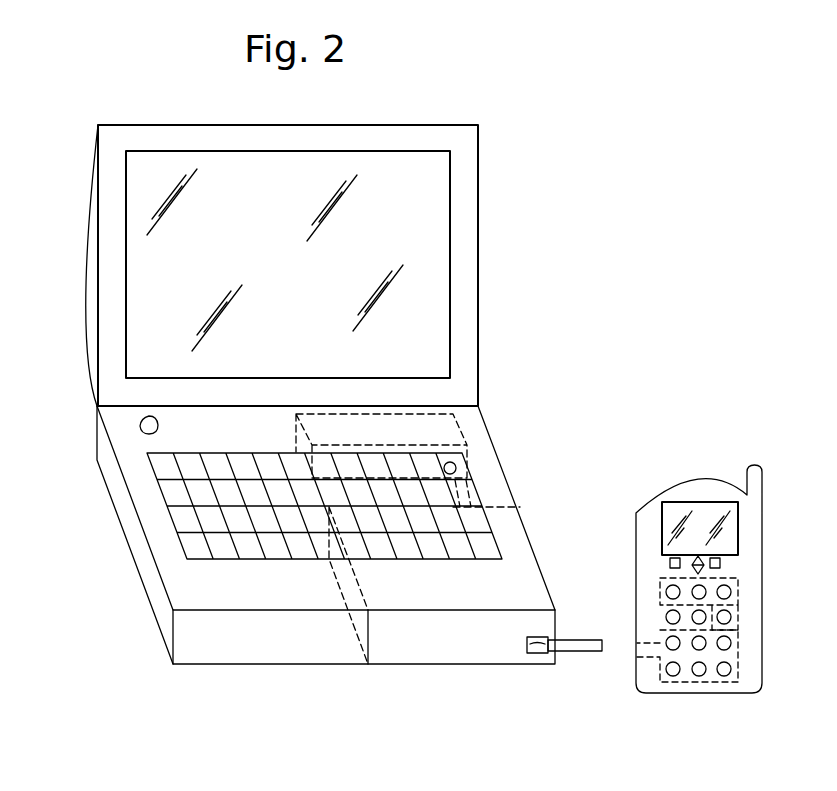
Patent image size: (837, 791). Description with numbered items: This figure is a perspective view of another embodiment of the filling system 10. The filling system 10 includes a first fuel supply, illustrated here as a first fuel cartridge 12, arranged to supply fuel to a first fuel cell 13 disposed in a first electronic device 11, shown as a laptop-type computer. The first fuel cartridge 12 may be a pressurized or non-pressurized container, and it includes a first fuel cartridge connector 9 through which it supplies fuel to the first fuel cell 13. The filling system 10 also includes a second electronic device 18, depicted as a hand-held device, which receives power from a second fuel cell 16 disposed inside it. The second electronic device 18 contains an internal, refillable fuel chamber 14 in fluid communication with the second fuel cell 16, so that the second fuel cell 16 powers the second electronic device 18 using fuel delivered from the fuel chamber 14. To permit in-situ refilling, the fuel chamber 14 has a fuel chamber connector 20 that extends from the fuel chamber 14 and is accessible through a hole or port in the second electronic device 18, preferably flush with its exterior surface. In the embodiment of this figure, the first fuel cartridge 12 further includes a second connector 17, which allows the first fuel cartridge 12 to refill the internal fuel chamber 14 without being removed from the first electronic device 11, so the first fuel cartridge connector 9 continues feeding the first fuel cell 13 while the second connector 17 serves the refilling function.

The filling system 10 is at (581, 340).
The first electronic device 11 is at (478, 181).
The first fuel cartridge 12 is at (413, 655).
The first fuel cell 13 is at (447, 426).
The first fuel cartridge connector 9 is at (458, 495).
The second connector 17 is at (572, 647).
The second electronic device 18 is at (762, 527).
The second fuel cell 16 is at (738, 583).
The fuel chamber 14 is at (738, 657).
The fuel chamber connector 20 is at (644, 658).